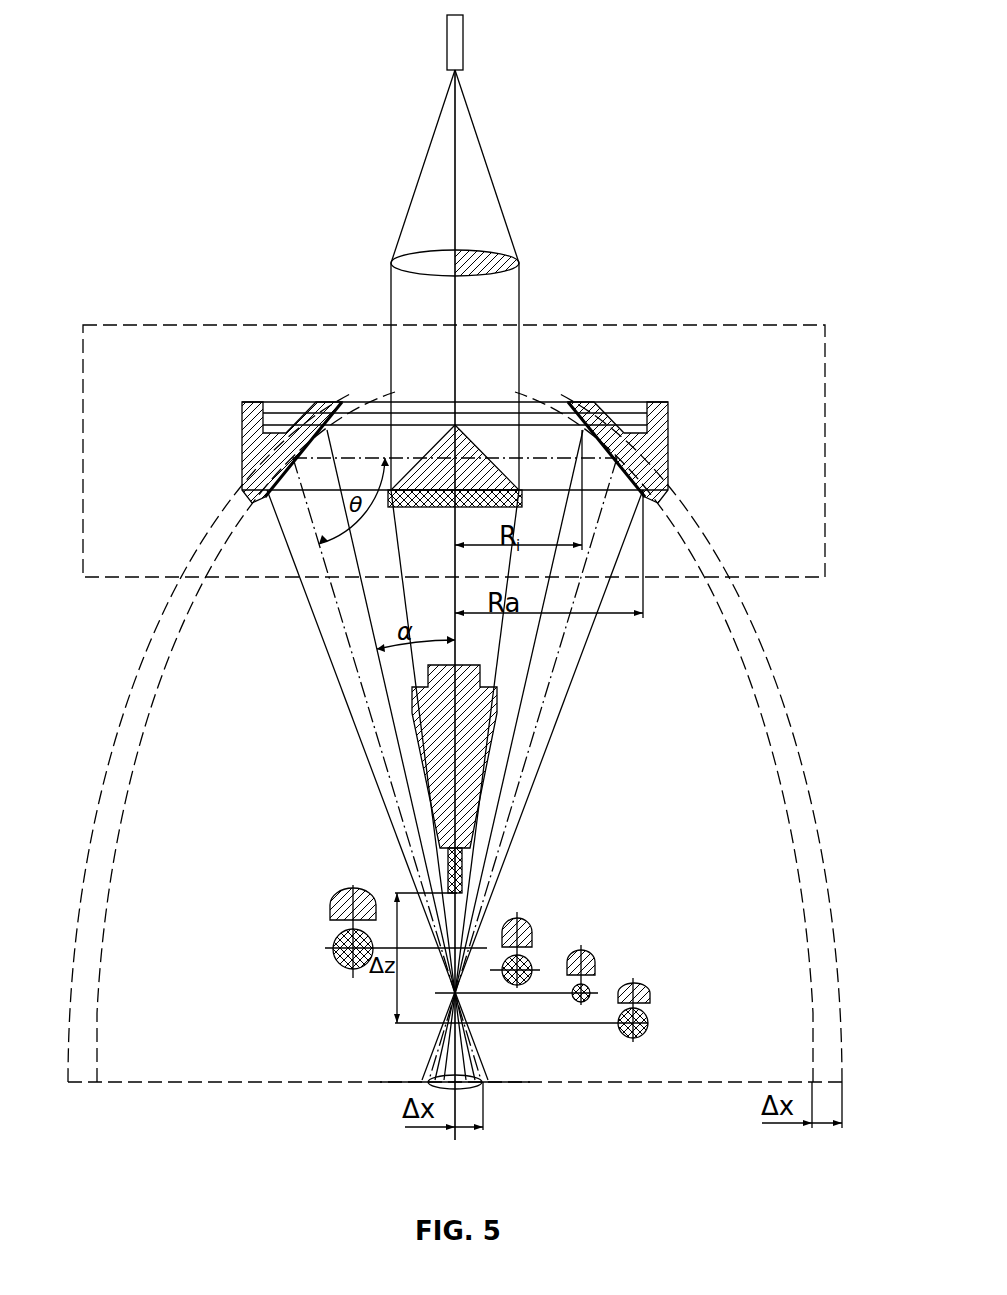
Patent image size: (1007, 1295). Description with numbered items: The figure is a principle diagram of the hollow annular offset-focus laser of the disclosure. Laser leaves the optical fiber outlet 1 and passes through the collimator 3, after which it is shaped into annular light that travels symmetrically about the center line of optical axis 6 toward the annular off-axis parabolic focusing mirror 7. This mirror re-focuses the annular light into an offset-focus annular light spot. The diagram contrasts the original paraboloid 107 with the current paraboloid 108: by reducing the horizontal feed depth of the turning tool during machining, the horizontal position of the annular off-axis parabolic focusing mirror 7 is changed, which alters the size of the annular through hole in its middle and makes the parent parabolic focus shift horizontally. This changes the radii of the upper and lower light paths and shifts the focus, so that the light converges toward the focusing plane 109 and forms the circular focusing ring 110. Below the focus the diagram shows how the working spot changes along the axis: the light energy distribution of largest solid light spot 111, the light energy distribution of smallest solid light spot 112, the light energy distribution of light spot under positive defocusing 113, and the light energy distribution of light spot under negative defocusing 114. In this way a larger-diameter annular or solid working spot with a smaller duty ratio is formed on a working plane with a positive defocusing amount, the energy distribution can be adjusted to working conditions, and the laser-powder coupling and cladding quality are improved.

The optical fiber outlet 1 is at (378, 139).
The collimator 3 is at (363, 299).
The center line of optical axis 6 is at (437, 385).
The annular off-axis parabolic focusing mirror 7 is at (440, 419).
The original paraboloid 107 is at (455, 737).
The current paraboloid 108 is at (455, 737).
The focusing plane 109 is at (328, 1039).
The circular focusing ring 110 is at (544, 1101).
The light energy distribution of largest solid light spot 111 is at (632, 941).
The light energy distribution of smallest solid light spot 112 is at (689, 971).
The light energy distribution of light spot under positive defocusing 113 is at (747, 1010).
The light energy distribution of light spot under negative defocusing 114 is at (290, 931).